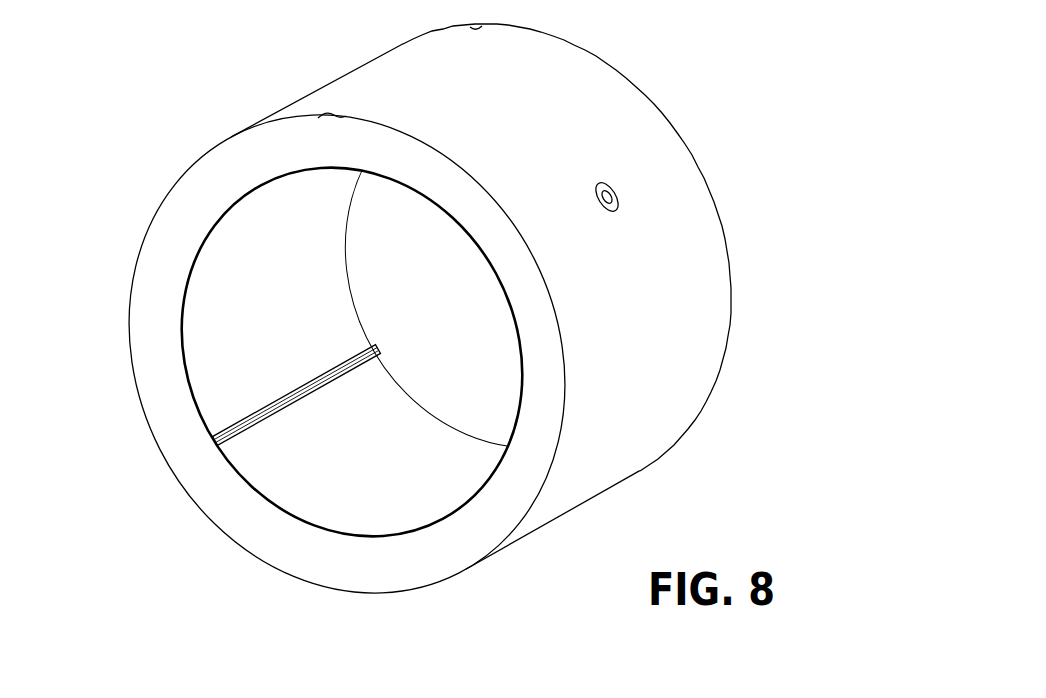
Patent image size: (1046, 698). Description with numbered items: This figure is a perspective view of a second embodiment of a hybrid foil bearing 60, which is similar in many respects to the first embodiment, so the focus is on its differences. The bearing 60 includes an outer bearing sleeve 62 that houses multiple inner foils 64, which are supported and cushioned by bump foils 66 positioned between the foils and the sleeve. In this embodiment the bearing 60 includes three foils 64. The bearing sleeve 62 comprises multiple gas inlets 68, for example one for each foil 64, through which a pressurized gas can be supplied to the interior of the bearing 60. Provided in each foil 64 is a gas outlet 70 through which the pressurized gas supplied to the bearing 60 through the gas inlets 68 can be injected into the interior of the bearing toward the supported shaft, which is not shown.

The hybrid foil bearing 60 is at (412, 346).
The outer bearing sleeve 62 is at (726, 218).
The inner foil 64 is at (213, 410).
The bump foil 66 is at (185, 265).
The gas inlet 68 is at (622, 218).
The gas outlet 70 is at (277, 208).